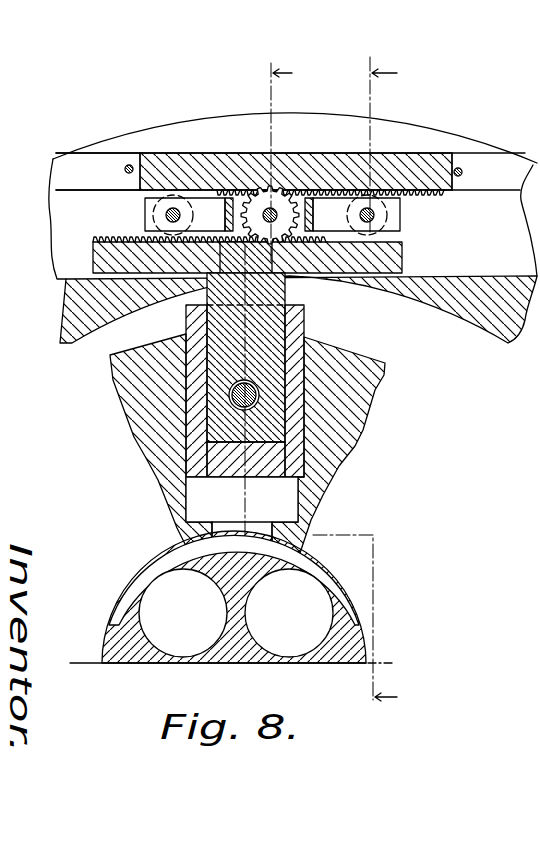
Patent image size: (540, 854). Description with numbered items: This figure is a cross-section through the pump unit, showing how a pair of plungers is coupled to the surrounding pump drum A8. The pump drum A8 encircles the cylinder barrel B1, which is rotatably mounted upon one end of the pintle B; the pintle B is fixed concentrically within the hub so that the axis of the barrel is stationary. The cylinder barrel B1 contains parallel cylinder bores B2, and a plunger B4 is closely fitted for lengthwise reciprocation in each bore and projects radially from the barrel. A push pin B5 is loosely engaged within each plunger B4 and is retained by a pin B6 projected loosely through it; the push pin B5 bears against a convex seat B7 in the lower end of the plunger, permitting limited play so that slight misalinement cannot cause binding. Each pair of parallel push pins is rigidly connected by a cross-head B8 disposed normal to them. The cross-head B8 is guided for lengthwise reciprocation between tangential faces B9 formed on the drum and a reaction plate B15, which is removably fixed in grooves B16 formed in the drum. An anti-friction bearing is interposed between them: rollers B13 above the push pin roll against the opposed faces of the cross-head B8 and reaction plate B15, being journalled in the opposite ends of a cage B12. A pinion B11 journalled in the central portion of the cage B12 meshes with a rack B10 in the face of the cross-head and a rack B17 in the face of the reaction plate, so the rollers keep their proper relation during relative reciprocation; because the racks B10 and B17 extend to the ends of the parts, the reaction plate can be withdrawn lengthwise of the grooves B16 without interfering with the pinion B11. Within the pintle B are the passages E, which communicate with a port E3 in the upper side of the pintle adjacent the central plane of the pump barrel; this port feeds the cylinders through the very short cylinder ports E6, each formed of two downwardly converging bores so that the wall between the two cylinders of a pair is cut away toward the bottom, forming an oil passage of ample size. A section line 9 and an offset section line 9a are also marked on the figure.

The pump drum A8 is at (289, 114).
The grooves B16 is at (107, 165).
The reaction plate B15 is at (213, 164).
The rack B17 is at (310, 191).
The rollers B13 is at (168, 194).
The rack B10 is at (121, 237).
The cage B12 is at (400, 211).
The pinion B11 is at (278, 193).
The cross-head B8 is at (402, 249).
The tangential faces B9 is at (72, 284).
The cylinder barrel B1 is at (356, 354).
The push pin B5 is at (188, 303).
The plunger B4 is at (300, 323).
The convex seat B7 is at (217, 446).
The cylinder bores B2 is at (190, 496).
The pin B6 is at (229, 396).
The cylinder ports E6 is at (220, 534).
The port E3 is at (127, 601).
The passages E is at (236, 613).
The pintle B is at (353, 649).
The section line 9 is at (331, 396).
The section line 9a is at (379, 133).